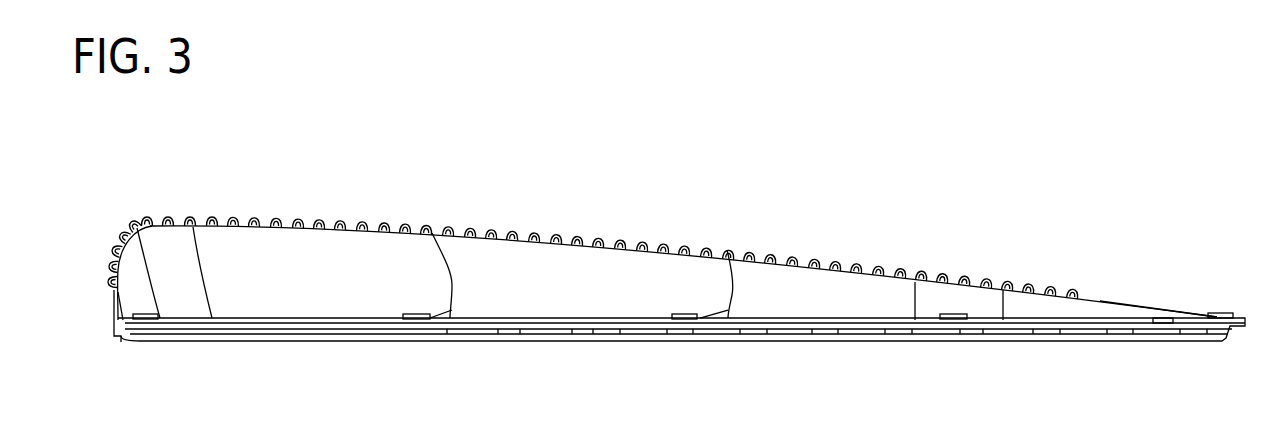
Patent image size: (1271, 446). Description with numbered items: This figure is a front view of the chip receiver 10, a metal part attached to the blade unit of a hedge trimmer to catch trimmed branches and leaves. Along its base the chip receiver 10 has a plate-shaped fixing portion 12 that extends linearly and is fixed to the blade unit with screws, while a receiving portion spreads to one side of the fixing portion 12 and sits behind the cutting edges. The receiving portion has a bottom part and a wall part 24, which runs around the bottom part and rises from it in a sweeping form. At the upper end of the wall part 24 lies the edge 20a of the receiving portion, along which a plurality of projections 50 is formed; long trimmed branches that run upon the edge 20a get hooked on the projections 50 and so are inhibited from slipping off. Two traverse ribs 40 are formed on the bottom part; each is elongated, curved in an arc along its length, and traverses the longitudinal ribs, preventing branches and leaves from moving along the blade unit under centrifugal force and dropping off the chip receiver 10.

The chip receiver 10 is at (1092, 147).
The fixing portion 12 is at (550, 342).
The edge of the receiving portion 20a is at (1094, 300).
The wall part 24 is at (807, 288).
The traverse ribs 40 is at (432, 232).
The projections 50 is at (912, 278).